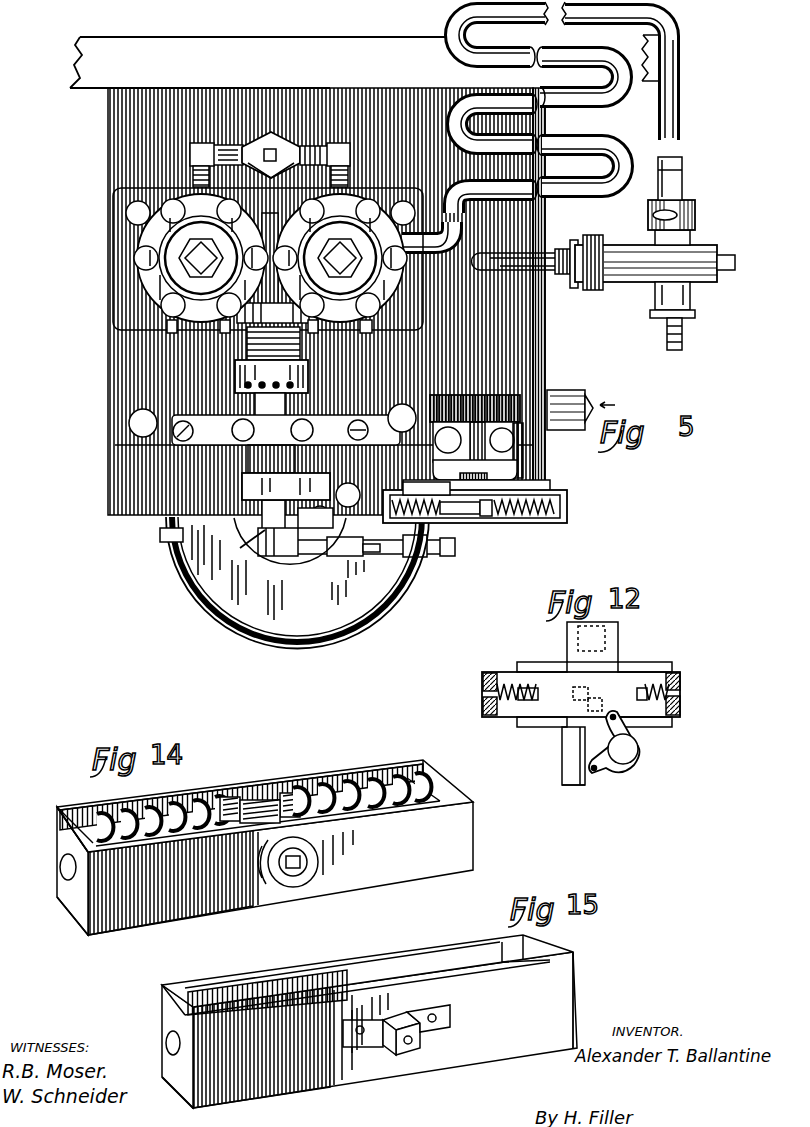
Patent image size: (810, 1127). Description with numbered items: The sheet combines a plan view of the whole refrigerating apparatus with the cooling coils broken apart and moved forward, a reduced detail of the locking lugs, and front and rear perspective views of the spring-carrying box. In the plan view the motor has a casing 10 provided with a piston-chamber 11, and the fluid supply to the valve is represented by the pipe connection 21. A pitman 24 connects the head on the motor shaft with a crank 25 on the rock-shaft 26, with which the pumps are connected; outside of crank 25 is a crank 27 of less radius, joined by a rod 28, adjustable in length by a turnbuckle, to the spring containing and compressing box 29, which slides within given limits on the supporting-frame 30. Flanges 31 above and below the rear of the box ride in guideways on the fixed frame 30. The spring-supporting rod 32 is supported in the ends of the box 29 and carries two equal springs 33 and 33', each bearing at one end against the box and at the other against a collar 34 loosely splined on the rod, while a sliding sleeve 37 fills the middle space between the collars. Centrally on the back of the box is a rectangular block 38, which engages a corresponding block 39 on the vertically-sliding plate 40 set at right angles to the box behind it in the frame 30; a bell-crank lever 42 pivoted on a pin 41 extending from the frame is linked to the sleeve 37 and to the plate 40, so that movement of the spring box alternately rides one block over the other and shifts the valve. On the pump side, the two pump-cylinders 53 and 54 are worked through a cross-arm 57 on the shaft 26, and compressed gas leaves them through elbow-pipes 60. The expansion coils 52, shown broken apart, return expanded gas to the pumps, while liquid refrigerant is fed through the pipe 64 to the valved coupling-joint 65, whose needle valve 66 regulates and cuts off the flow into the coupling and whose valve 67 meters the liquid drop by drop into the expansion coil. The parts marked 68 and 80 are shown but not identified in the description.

In FIG. 5, the casing 10 is at (122, 118).
In FIG. 5, the piston-chamber 11 is at (375, 608).
In FIG. 5, the pipe connection 21 is at (581, 400).
In FIG. 5, the pitman 24 is at (328, 519).
In FIG. 12, the pitman 24 is at (680, 682).
In FIG. 5, the crank 25 is at (300, 474).
In FIG. 5, the rock-shaft 26 is at (287, 412).
In FIG. 5, the crank 27 is at (240, 547).
In FIG. 5, the rod 28 is at (325, 555).
In FIG. 5, the spring containing and compressing box 29 is at (568, 506).
In FIG. 14, the spring containing and compressing box 29 is at (467, 832).
In FIG. 15, the spring containing and compressing box 29 is at (390, 960).
In FIG. 5, the supporting-frame 30 is at (548, 482).
In FIG. 12, the supporting-frame 30 is at (566, 745).
In FIG. 14, the flanges 31 is at (108, 805).
In FIG. 15, the flanges 31 is at (572, 953).
In FIG. 5, the spring-supporting rod 32 is at (492, 522).
In FIG. 12, the spring-supporting rod 32 is at (538, 694).
In FIG. 14, the spring-supporting rod 32 is at (60, 868).
In FIG. 15, the spring-supporting rod 32 is at (166, 1043).
In FIG. 5, the spring 33 is at (406, 493).
In FIG. 12, the spring 33 is at (520, 684).
In FIG. 14, the spring 33 is at (164, 803).
In FIG. 5, the spring 33' is at (533, 519).
In FIG. 12, the spring 33' is at (650, 699).
In FIG. 14, the spring 33' is at (362, 775).
In FIG. 5, the collar 34 is at (520, 524).
In FIG. 14, the collar 34 is at (222, 797).
In FIG. 5, the sliding sleeve 37 is at (426, 488).
In FIG. 14, the sliding sleeve 37 is at (258, 800).
In FIG. 12, the rectangular block or projection 38 is at (588, 689).
In FIG. 15, the rectangular block or projection 38 is at (418, 1041).
In FIG. 12, the projection or block 39 is at (600, 706).
In FIG. 5, the vertically-sliding plate 40 is at (475, 468).
In FIG. 12, the vertically-sliding plate 40 is at (585, 785).
In FIG. 5, the pivot pin or bolt 41 is at (512, 440).
In FIG. 12, the bell-crank lever 42 is at (638, 728).
In FIG. 5, the refrigerating or expansion coils 52 is at (563, 110).
In FIG. 5, the pump-cylinder 53 is at (195, 258).
In FIG. 5, the pump-cylinder 54 is at (344, 258).
In FIG. 5, the cross-arm 57 is at (268, 259).
In FIG. 5, the elbow-pipes 60 is at (192, 174).
In FIG. 5, the pipe 64 is at (488, 262).
In FIG. 5, the valved coupling-joint 65 is at (648, 276).
In FIG. 5, the valve 66 is at (566, 275).
In FIG. 5, the valve 67 is at (684, 332).
In FIG. 5, the plug 68 is at (727, 266).
In FIG. 5, the beam 80 is at (75, 70).